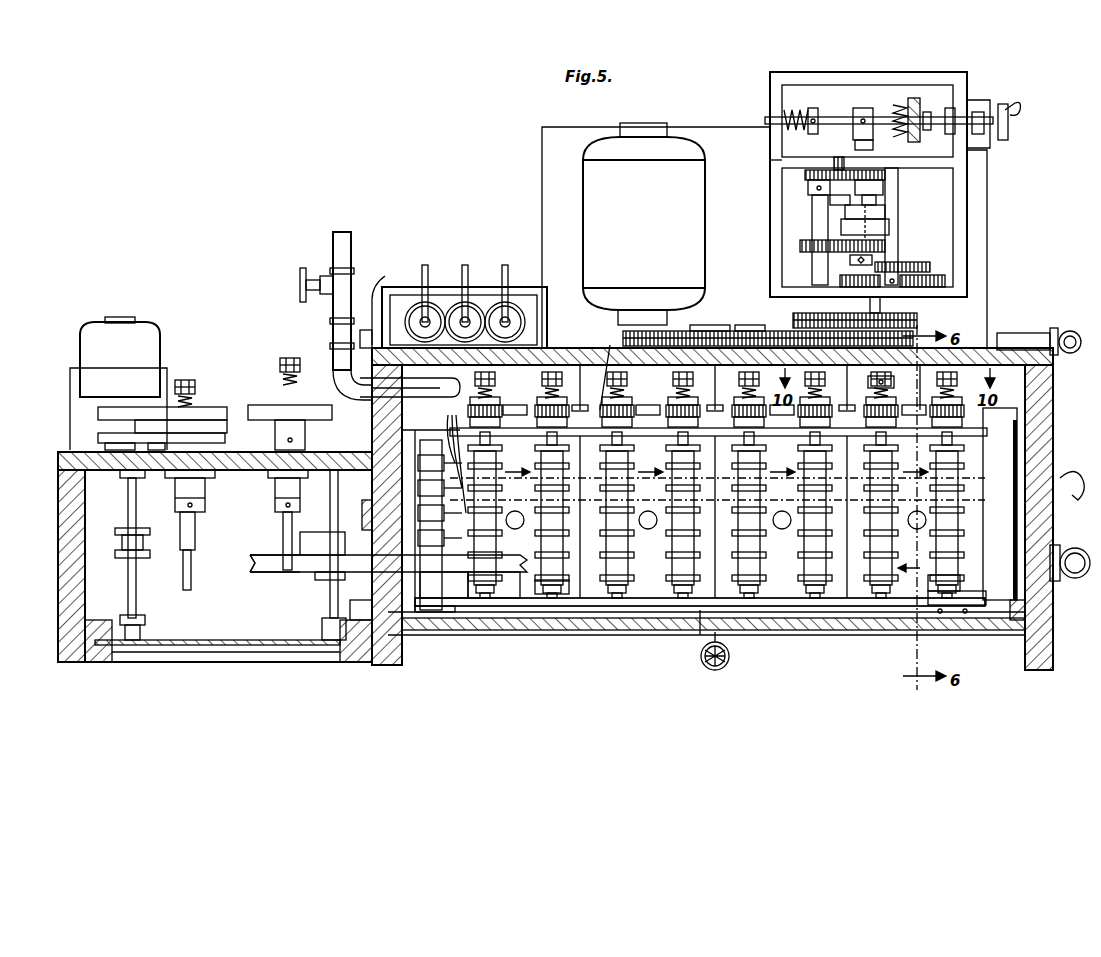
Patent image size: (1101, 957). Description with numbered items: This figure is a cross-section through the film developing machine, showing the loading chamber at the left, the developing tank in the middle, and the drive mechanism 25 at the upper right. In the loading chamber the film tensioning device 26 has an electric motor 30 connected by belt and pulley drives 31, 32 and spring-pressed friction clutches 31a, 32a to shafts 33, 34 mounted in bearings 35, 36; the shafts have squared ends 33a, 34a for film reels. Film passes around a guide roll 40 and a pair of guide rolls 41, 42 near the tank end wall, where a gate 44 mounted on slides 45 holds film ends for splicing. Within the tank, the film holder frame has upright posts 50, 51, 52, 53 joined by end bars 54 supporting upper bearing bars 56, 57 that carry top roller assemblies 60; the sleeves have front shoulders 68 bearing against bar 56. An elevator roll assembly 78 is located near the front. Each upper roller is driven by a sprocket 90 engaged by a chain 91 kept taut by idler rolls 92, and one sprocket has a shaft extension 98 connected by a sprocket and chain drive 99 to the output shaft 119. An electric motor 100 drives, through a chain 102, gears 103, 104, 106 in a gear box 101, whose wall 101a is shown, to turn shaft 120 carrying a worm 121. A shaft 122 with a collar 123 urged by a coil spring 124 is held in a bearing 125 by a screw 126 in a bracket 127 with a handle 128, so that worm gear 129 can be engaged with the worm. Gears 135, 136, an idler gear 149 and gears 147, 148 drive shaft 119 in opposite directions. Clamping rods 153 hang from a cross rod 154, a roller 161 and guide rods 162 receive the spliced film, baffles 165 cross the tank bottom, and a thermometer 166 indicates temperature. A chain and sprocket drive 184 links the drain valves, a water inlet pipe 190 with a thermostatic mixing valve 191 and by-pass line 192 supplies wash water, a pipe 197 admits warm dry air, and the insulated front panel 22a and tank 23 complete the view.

The removable front panel 22a is at (755, 630).
The tank 23 is at (95, 535).
The drive mechanism 25 is at (1003, 62).
The film tensioning device 26 is at (290, 320).
The electric motor 30 is at (80, 352).
The belt and pulley drive 31 is at (180, 440).
The spring-pressed friction clutch 31a is at (225, 422).
The belt and pulley drive 32 is at (80, 400).
The spring-pressed friction clutch 32a is at (280, 398).
The shaft 33 is at (183, 525).
The squared end 33a is at (185, 575).
The shaft 34 is at (285, 522).
The squared end 34a is at (285, 555).
The bearing 35 is at (180, 495).
The bearing 36 is at (278, 492).
The guide roll 40 is at (125, 550).
The guide roll 41 is at (322, 535).
The guide roll 42 is at (330, 585).
The gate 44 is at (322, 626).
The slides 45 is at (362, 515).
The upright post 50 is at (432, 612).
The upright post 51 is at (418, 455).
The upright post 52 is at (975, 605).
The upright post 53 is at (985, 450).
The end bar 54 is at (362, 595).
The upper bearing bar 56 is at (605, 606).
The upper bearing bar 57 is at (535, 428).
The top roller assembly 60 is at (818, 570).
The front shoulder 68 is at (552, 594).
The roll assembly 78 is at (945, 591).
The sprocket 90 is at (755, 340).
The chain 91 is at (655, 410).
The idler roll 92 is at (590, 410).
The shaft extension 98 is at (890, 380).
The sprocket and chain drive 99 is at (839, 313).
The electric motor 100 is at (592, 195).
The gear box 101 is at (968, 92).
The housing wall 101a is at (790, 152).
The chain 102 is at (690, 345).
The gear 103 is at (900, 266).
The gear 104 is at (945, 281).
The gear 106 is at (930, 264).
The output shaft 119 is at (812, 220).
The shaft 120 is at (900, 220).
The worm 121 is at (903, 104).
The shaft 122 is at (865, 108).
The collar 123 is at (813, 108).
The coil spring 124 is at (786, 116).
The bearing 125 is at (930, 130).
The screw 126 is at (978, 138).
The bracket 127 is at (985, 152).
The handle 128 is at (1008, 130).
The worm gear 129 is at (935, 108).
The gear 135 is at (885, 188).
The gear 136 is at (887, 240).
The gear 147 is at (800, 246).
The gear 148 is at (805, 174).
The idler gear 149 is at (836, 160).
The rods 153 is at (445, 455).
The cross rod 154 is at (460, 556).
The roller 161 is at (495, 598).
The guide rods 162 is at (445, 598).
The baffle 165 is at (705, 630).
The thermometer 166 is at (715, 671).
The chain and sprocket drive 184 is at (412, 392).
The water inlet pipe 190 is at (333, 313).
The thermostatic mixing valve 191 is at (328, 278).
The by-pass line 192 is at (1062, 322).
The pipe 197 is at (1072, 475).